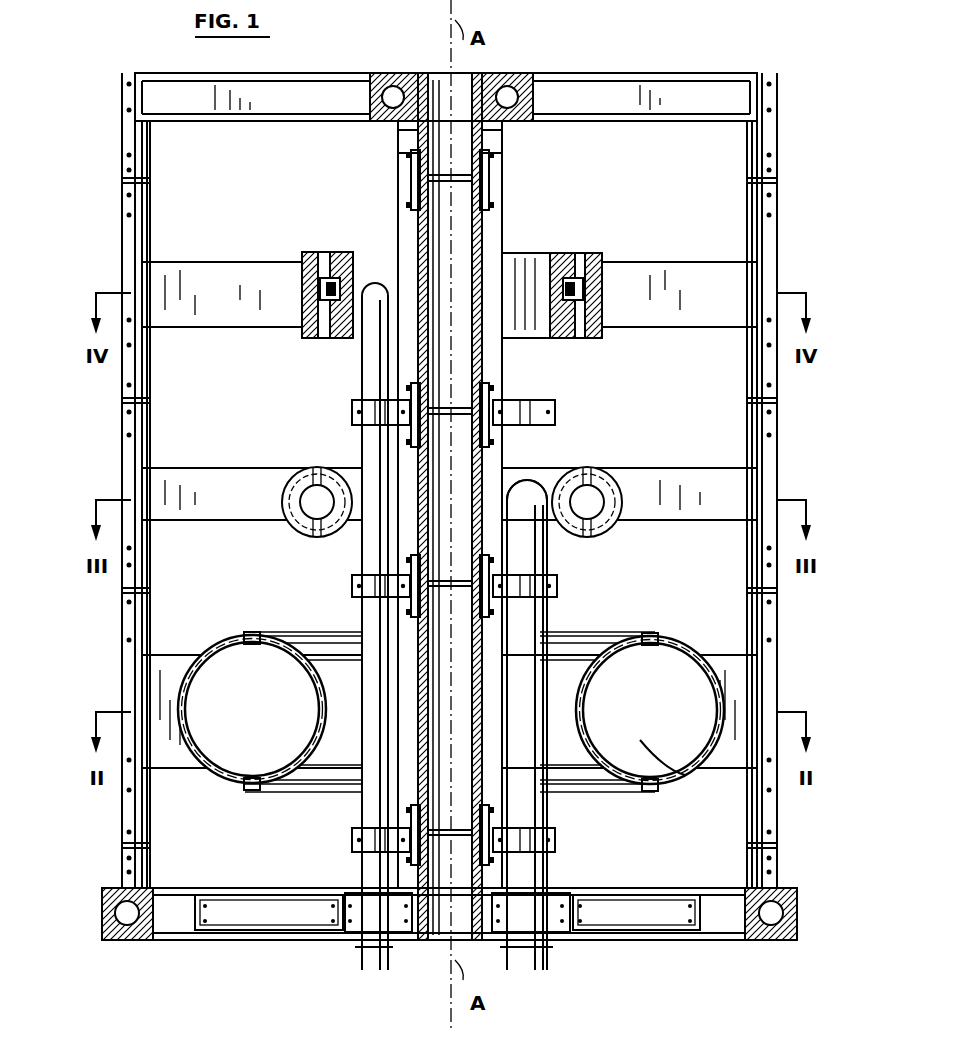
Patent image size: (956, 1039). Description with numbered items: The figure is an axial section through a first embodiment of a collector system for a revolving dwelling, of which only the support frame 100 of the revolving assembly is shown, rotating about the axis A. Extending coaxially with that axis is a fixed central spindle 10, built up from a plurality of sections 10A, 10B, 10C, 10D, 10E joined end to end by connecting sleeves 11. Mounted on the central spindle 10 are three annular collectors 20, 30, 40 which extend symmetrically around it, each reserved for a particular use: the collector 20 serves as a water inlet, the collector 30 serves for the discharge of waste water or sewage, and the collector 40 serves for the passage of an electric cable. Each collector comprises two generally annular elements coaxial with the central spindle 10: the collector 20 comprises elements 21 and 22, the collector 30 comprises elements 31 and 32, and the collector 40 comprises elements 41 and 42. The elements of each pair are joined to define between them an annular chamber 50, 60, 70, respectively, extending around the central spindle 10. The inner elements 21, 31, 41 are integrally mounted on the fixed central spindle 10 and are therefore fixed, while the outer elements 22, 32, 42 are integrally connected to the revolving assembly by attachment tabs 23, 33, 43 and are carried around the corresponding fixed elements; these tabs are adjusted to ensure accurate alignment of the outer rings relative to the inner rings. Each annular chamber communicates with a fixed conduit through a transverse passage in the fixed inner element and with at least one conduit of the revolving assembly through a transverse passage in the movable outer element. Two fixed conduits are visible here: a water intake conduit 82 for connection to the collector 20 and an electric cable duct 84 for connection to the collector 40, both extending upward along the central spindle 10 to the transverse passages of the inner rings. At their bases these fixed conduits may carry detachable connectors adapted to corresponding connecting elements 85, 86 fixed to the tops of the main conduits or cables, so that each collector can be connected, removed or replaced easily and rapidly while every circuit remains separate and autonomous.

The support frame 100 is at (678, 93).
The fixed central spindle 10 is at (412, 232).
The spindle section 10A is at (422, 942).
The spindle section 10B is at (420, 790).
The spindle section 10C is at (492, 482).
The spindle section 10D is at (487, 252).
The spindle section 10E is at (495, 132).
The connecting sleeve 11 is at (488, 410).
The collector 20 is at (560, 470).
The inner element 21 is at (330, 482).
The outer element 22 is at (300, 480).
The attachment tab 23 is at (200, 490).
The collector 30 is at (608, 625).
The inner element 31 is at (280, 632).
The outer element 32 is at (226, 642).
The attachment tab 33 is at (180, 770).
The collector 40 is at (530, 248).
The inner element 41 is at (336, 256).
The outer element 42 is at (318, 256).
The attachment tab 43 is at (208, 268).
The annular chamber 50 is at (592, 508).
The annular chamber 60 is at (672, 760).
The annular chamber 70 is at (582, 320).
The water intake conduit 82 is at (528, 805).
The electric cable duct 84 is at (372, 758).
The connecting element 85 is at (548, 920).
The connecting element 86 is at (370, 920).